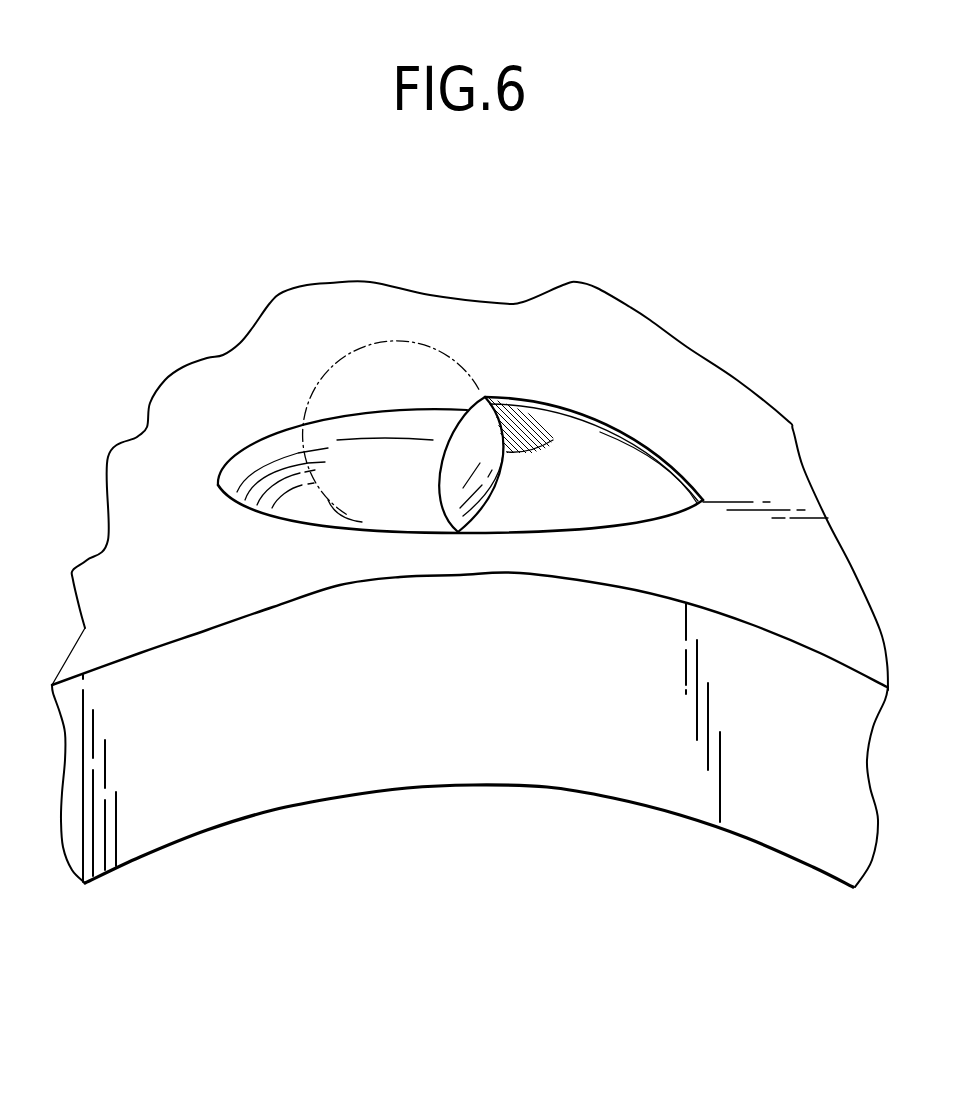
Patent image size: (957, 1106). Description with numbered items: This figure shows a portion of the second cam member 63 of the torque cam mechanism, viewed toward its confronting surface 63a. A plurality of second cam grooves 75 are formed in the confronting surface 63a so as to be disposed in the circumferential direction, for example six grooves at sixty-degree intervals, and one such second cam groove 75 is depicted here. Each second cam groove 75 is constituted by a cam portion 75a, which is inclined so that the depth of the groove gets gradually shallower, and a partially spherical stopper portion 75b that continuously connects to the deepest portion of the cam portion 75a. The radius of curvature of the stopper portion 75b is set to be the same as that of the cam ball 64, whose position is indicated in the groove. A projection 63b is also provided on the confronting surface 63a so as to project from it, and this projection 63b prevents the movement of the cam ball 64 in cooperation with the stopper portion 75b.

The second cam member 63 is at (658, 836).
The confronting surface 63a is at (323, 347).
The projection 63b is at (590, 440).
The cam ball 64 is at (433, 372).
The second cam groove 75 is at (410, 681).
The cam portion 75a is at (348, 522).
The stopper portion 75b is at (458, 523).